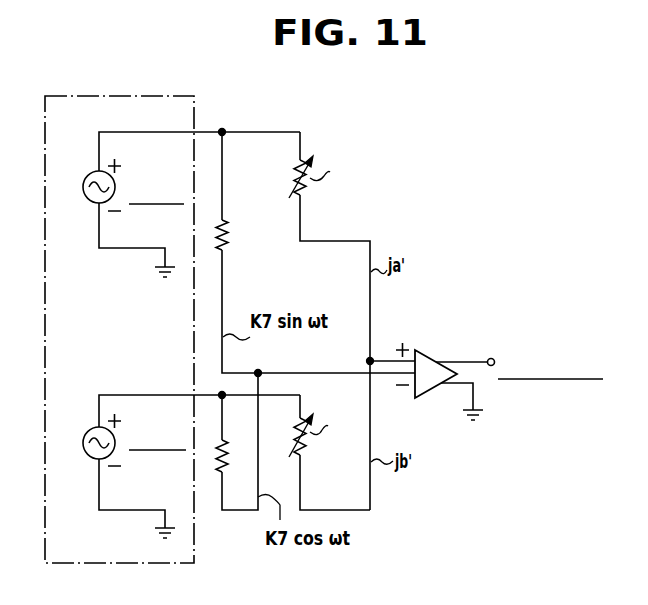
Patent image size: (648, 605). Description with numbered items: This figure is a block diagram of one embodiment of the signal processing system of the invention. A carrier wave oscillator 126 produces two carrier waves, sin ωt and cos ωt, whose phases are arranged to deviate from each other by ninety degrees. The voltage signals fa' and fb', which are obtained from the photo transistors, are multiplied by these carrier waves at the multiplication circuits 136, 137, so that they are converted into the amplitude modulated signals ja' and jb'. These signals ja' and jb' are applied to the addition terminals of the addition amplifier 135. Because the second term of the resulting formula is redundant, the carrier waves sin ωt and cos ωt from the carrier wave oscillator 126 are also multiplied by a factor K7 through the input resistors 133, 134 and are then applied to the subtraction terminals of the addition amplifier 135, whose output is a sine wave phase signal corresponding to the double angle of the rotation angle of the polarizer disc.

The carrier wave oscillator 126 is at (143, 79).
The input resistor 133 is at (230, 238).
The input resistor 134 is at (219, 468).
The addition amplifier 135 is at (428, 361).
The multiplication circuit 136 is at (306, 190).
The multiplication circuit 137 is at (306, 448).